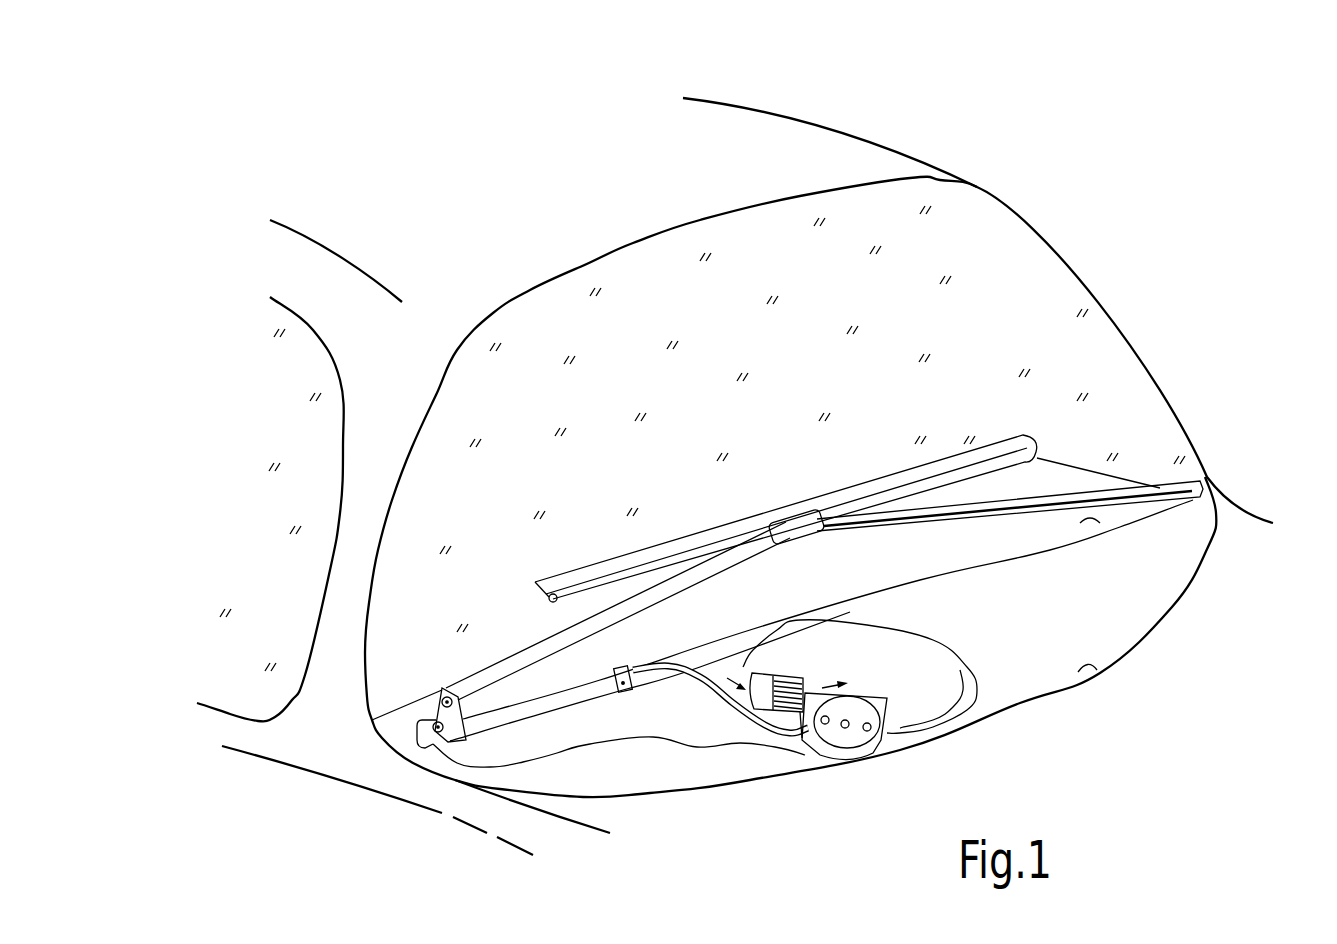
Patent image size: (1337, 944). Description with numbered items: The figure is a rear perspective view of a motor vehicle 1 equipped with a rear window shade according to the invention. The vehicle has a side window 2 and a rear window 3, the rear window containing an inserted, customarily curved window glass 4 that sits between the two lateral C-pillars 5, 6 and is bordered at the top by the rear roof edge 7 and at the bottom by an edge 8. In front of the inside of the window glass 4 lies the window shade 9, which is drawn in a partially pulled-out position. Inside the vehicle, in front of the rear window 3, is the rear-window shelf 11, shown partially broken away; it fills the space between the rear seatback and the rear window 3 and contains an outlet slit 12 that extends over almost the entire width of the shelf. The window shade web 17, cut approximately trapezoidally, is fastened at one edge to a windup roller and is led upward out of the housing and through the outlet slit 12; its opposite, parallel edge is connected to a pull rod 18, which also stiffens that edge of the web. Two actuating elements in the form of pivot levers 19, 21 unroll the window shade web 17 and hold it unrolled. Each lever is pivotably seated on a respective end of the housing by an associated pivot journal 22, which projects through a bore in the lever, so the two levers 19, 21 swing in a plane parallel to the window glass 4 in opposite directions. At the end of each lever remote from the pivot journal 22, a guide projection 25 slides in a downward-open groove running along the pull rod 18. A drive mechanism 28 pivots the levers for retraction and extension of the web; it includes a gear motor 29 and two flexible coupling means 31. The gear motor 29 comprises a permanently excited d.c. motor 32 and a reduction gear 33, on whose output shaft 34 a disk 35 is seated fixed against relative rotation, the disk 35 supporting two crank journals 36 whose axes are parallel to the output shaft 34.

The motor vehicle 1 is at (866, 104).
The side window 2 is at (223, 497).
The rear window 3 is at (745, 262).
The window glass 4 is at (637, 347).
The C-pillar 5 is at (374, 528).
The C-pillar 6 is at (1065, 293).
The rear roof edge 7 is at (625, 255).
The edge 8 is at (1098, 675).
The window shade 9 is at (962, 390).
The rear-window shelf 11 is at (1123, 617).
The outlet slit 12 is at (1105, 523).
The window shade web 17 is at (841, 581).
The pull rod 18 is at (633, 558).
The pivot lever 19 is at (522, 658).
The pivot lever 21 is at (1063, 513).
The pivot journal 22 is at (436, 735).
The guide projection 25 is at (777, 518).
The drive mechanism 28 is at (689, 722).
The gear motor 29 is at (862, 665).
The flexible coupling means 31 is at (578, 702).
The d.c. motor 32 is at (773, 676).
The reduction gear 33 is at (810, 750).
The output shaft 34 is at (847, 727).
The disk 35 is at (866, 712).
The crank journal 36 is at (787, 745).